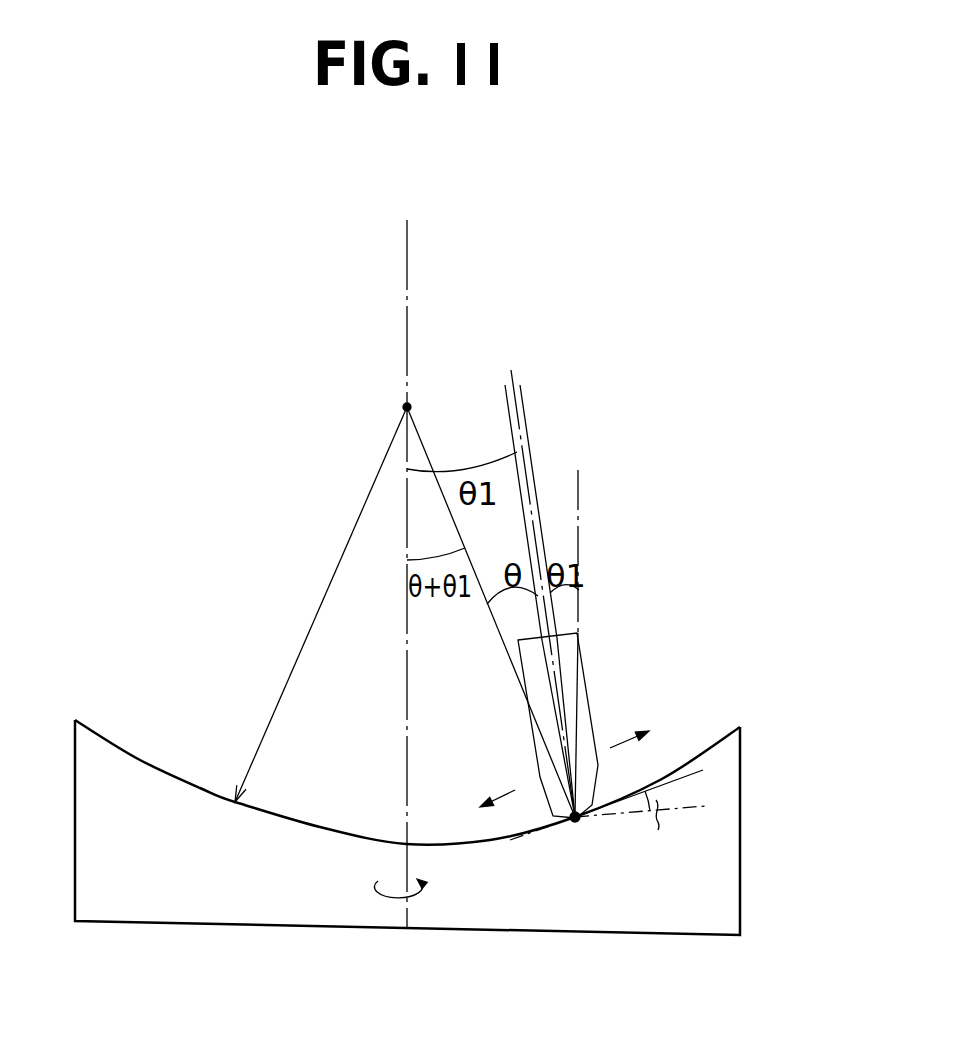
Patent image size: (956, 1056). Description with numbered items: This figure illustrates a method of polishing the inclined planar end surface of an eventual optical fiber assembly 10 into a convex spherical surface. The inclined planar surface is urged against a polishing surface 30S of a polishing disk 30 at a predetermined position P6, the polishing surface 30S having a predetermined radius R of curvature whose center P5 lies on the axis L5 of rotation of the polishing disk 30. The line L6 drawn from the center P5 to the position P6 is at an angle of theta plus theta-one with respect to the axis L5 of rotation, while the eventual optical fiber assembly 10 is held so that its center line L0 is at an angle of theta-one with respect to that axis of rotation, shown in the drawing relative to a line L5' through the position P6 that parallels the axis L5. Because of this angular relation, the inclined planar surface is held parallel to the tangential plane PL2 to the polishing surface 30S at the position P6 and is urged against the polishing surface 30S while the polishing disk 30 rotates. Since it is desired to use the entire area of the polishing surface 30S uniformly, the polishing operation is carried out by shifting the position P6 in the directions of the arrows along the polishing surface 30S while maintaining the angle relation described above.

The eventual optical fiber assembly 10 is at (597, 692).
The polishing disk 30 is at (500, 905).
The polishing surface 30S is at (293, 816).
The axis of rotation L5 is at (458, 574).
The axis parallel to the axis of rotation L5' is at (629, 637).
The line from center to polishing position L6 is at (515, 672).
The center line L0 is at (521, 404).
The center of the polishing surface P5 is at (407, 407).
The predetermined position P6 is at (577, 822).
The tangential plane PL2 is at (677, 779).
The radius of curvature R is at (321, 604).